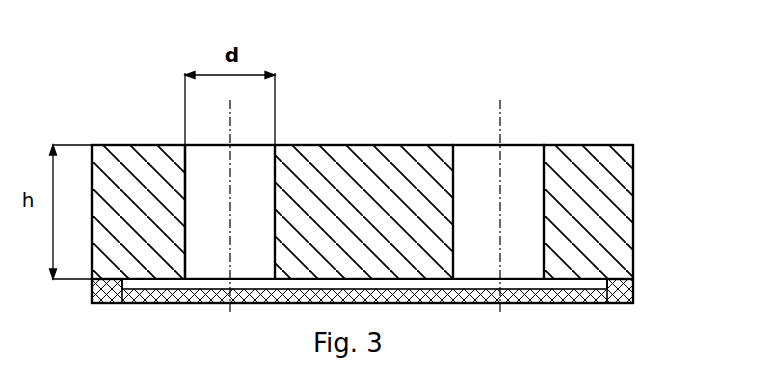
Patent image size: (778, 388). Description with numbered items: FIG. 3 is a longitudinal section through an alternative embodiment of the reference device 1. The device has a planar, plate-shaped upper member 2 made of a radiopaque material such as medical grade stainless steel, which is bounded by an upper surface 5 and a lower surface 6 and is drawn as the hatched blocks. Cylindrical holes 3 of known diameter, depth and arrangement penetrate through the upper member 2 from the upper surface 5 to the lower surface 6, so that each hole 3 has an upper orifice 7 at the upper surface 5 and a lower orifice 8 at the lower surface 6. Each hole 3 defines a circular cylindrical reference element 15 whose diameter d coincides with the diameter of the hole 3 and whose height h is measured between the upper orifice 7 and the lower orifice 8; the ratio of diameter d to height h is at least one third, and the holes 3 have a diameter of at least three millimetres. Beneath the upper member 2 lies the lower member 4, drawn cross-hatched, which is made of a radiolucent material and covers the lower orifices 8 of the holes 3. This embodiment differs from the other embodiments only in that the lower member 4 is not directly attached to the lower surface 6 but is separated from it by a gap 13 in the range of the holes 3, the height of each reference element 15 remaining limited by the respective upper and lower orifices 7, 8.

The reference device 1 is at (547, 57).
The upper member 2 is at (605, 212).
The hole 3 is at (258, 183).
The lower member 4 is at (622, 297).
The upper surface 5 is at (600, 145).
The lower surface 6 is at (572, 282).
The upper orifice 7 is at (185, 145).
The lower orifice 8 is at (182, 282).
The gap 13 is at (435, 283).
The reference element 15 is at (207, 145).